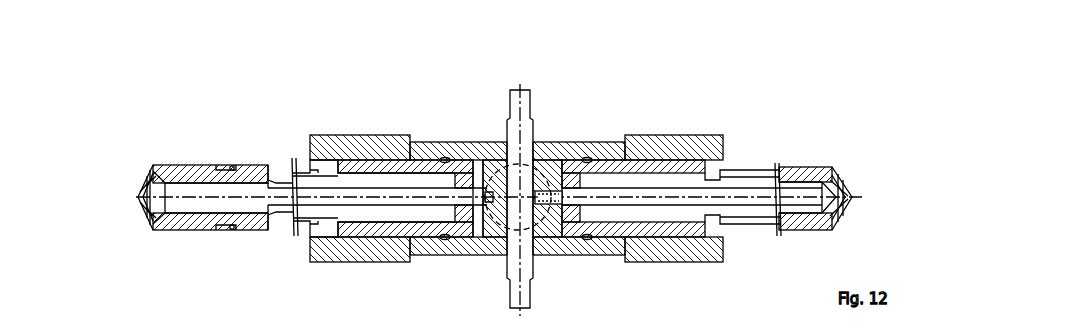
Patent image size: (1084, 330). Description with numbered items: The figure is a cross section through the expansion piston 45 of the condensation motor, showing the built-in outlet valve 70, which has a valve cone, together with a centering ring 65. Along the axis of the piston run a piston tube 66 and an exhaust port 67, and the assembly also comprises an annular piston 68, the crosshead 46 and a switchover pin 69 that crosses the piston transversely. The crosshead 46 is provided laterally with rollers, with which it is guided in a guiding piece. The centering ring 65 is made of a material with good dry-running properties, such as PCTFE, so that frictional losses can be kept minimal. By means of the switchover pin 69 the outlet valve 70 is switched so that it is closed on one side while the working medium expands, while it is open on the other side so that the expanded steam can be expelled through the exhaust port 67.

The outlet valve 70 is at (148, 178).
The expansion piston 45 is at (193, 172).
The centering ring 65 is at (231, 167).
The piston tube 66 is at (256, 171).
The exhaust port 67 is at (309, 163).
The annular piston 68 is at (370, 145).
The crosshead 46 is at (443, 148).
The switchover pin 69 is at (528, 132).